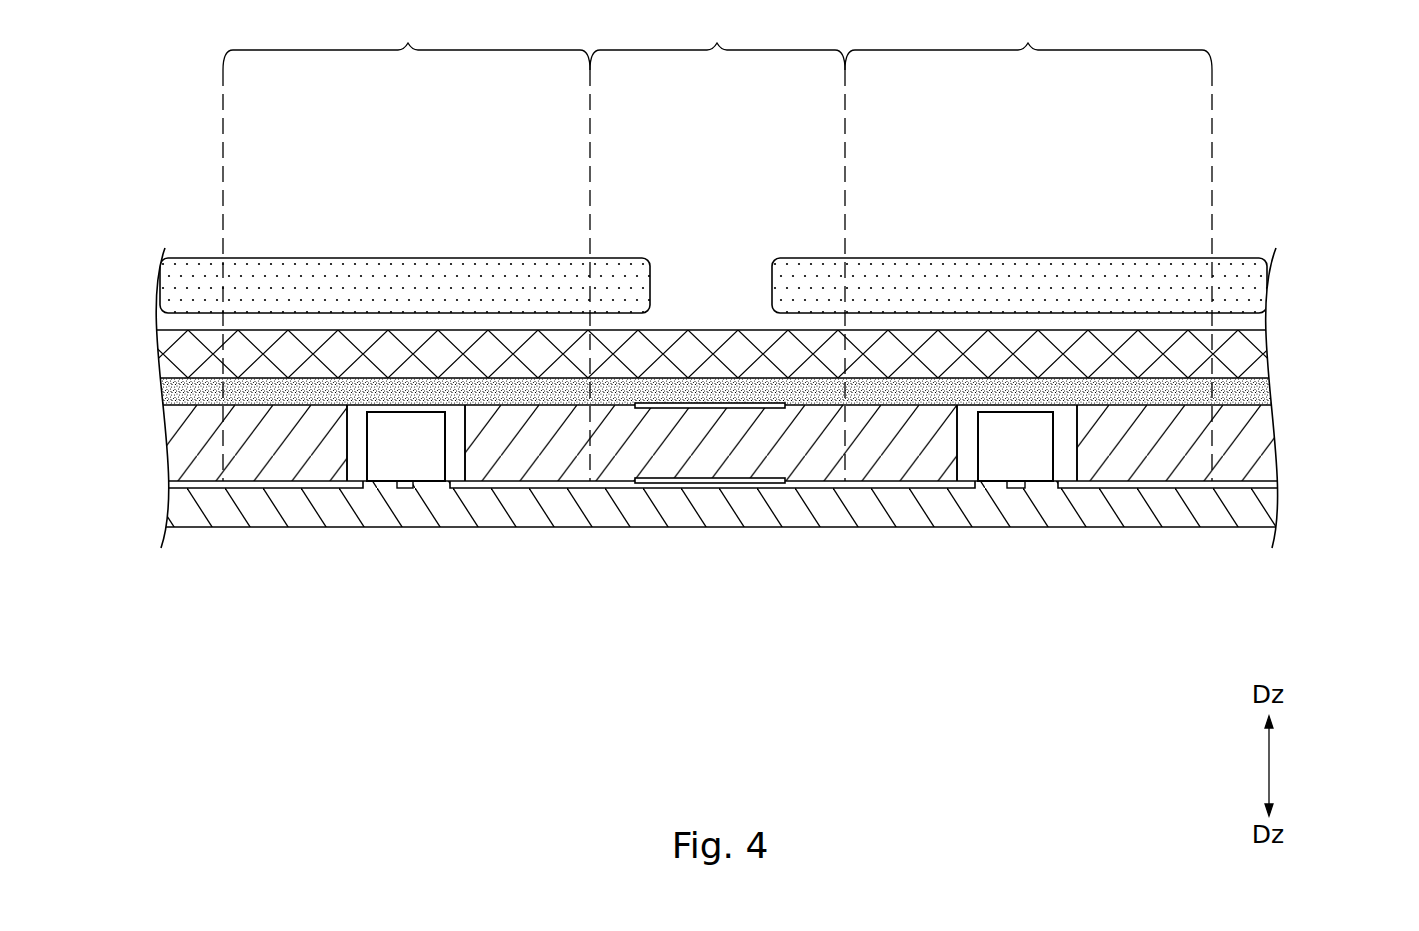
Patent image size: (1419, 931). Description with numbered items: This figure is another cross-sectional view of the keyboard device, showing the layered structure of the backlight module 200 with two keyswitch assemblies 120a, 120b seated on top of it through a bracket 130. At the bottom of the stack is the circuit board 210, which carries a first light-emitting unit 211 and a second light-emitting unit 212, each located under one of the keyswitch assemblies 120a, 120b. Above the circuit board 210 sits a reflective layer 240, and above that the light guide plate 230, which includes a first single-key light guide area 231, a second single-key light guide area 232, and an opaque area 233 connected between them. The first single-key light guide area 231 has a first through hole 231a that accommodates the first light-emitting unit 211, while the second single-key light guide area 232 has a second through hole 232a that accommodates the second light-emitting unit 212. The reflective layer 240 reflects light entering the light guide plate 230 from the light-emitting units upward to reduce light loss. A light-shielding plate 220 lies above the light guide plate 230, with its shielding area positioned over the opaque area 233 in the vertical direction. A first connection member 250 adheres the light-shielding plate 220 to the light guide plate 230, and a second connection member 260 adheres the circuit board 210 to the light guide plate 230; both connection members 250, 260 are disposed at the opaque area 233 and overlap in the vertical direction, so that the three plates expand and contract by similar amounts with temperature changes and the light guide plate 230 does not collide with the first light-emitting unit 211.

The backlight module 200 is at (141, 391).
The circuit board 210 is at (1262, 512).
The first light-emitting unit 211 is at (405, 465).
The second light-emitting unit 212 is at (1032, 465).
The light-shielding plate 220 is at (784, 391).
The light guide plate 230 is at (1268, 453).
The first single-key light guide area 231 is at (406, 245).
The first through hole 231a is at (341, 468).
The second single-key light guide area 232 is at (1028, 245).
The second through hole 232a is at (1085, 470).
The opaque area 233 is at (717, 245).
The reflective layer 240 is at (1272, 484).
The first connection member 250 is at (720, 402).
The second connection member 260 is at (708, 483).
The bracket 130 is at (1253, 351).
The keyswitch assembly 120a is at (406, 250).
The keyswitch assembly 120b is at (1016, 250).